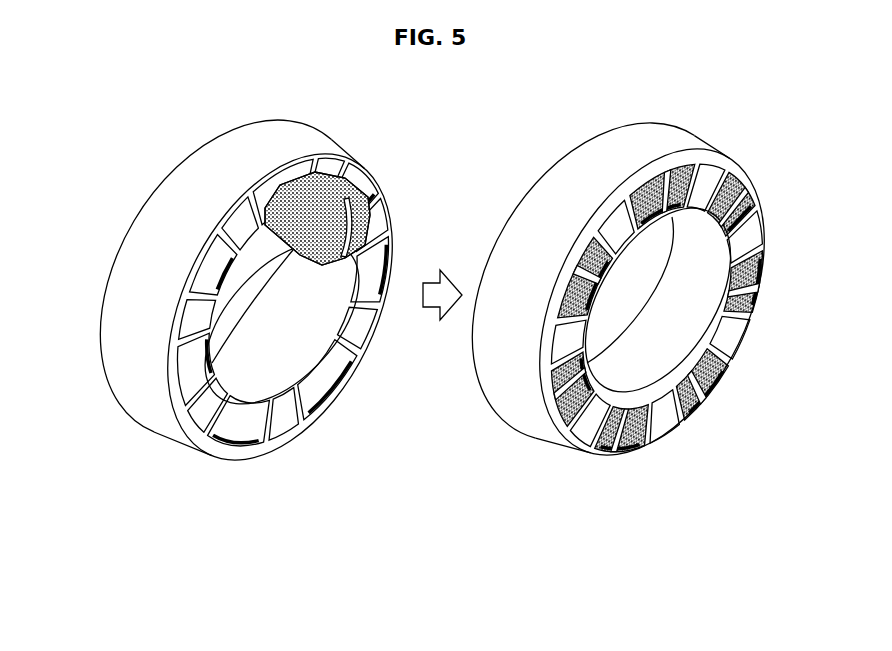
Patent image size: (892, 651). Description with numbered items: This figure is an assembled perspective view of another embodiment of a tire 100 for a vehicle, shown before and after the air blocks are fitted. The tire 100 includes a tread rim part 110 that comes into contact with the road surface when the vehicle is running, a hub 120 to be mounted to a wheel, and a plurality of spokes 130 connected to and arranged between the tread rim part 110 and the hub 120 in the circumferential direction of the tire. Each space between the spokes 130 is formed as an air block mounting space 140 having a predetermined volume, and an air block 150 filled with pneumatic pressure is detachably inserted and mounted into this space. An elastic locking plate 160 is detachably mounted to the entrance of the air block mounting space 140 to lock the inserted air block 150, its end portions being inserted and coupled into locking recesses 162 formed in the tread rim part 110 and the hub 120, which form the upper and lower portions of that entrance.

The tire 100 is at (546, 166).
The tread rim part 110 is at (152, 241).
The hub 120 is at (323, 311).
The spokes 130 is at (210, 247).
The air block mounting space 140 is at (270, 192).
The air block 150 is at (348, 185).
The elastic locking plate 160 is at (368, 236).
The locking recesses 162 is at (697, 178).